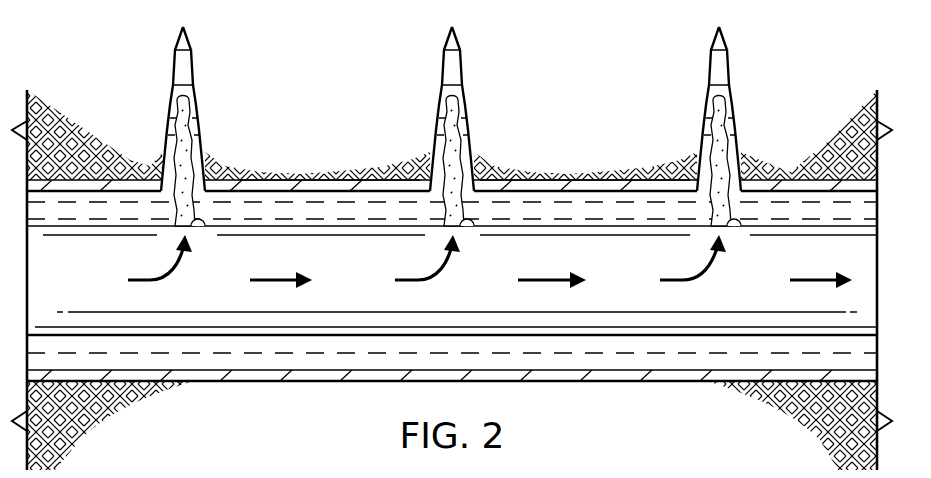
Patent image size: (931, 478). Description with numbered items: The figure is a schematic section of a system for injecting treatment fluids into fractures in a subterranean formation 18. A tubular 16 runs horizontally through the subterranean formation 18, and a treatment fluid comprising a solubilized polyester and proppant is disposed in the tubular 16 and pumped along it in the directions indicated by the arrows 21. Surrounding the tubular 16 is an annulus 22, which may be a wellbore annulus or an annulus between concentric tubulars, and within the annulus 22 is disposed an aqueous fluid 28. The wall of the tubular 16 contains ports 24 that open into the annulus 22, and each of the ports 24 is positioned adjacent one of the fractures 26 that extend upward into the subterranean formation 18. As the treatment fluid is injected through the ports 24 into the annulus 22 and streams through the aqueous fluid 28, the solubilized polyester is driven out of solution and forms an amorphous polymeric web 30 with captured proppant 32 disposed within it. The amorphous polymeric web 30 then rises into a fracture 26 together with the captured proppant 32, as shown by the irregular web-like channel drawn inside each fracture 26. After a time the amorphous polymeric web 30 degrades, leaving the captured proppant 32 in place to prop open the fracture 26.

The tubular 16 is at (642, 326).
The subterranean formation 18 is at (268, 441).
The arrows 21 is at (127, 279).
The annulus 22 is at (787, 197).
The ports 24 is at (200, 227).
The fractures 26 is at (183, 72).
The aqueous fluid 28 is at (315, 197).
The amorphous polymeric web 30 is at (197, 112).
The captured proppant 32 is at (181, 152).